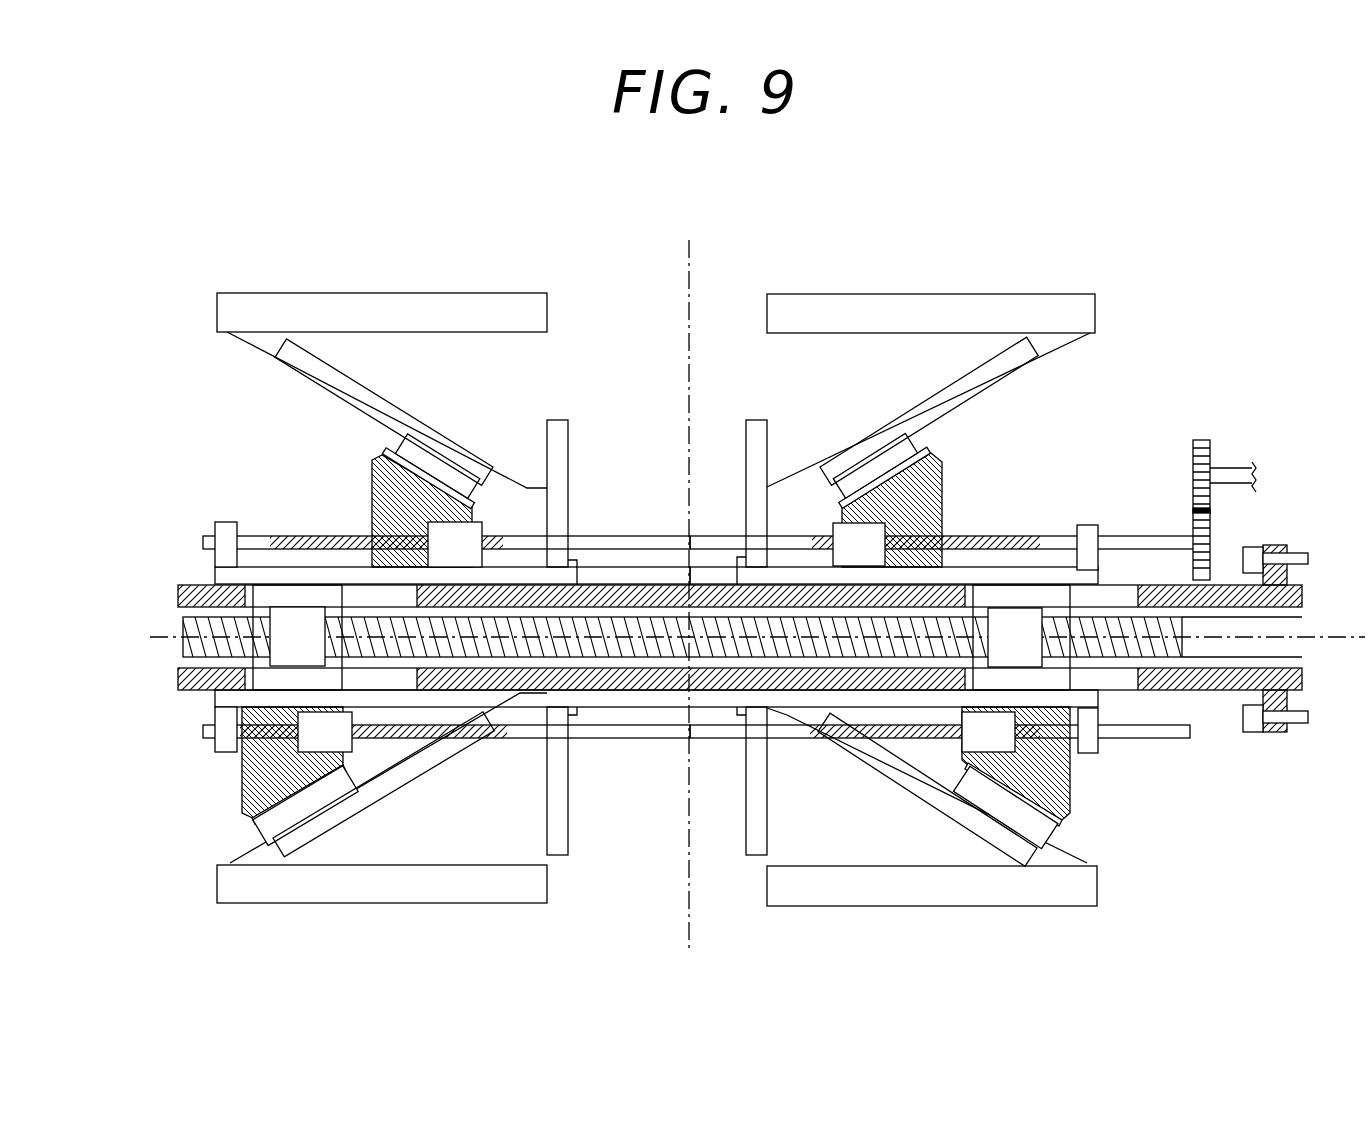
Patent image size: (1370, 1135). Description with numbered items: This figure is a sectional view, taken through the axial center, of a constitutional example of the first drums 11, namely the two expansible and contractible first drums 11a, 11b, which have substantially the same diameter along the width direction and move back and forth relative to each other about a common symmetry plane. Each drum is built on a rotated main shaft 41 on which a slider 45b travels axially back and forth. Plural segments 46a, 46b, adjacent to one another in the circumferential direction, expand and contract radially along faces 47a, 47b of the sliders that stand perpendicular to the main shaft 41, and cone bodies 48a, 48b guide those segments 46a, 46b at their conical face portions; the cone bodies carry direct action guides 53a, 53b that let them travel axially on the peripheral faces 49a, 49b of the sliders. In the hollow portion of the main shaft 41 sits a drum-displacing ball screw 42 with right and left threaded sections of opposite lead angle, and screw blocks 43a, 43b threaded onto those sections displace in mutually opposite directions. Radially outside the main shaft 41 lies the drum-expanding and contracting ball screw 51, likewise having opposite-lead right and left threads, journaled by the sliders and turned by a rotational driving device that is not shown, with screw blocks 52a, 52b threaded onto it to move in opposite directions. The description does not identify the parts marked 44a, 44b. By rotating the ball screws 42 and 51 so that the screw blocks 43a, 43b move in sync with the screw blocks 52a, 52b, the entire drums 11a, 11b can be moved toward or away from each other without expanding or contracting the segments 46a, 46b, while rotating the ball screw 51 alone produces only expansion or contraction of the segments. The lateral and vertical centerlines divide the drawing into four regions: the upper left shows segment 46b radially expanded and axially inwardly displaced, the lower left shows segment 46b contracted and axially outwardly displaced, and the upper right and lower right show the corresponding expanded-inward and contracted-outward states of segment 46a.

The tube processing apparatus 11 is at (726, 565).
The first drum 11a is at (973, 547).
The first drum 11b is at (413, 542).
The main shaft 41 is at (1158, 597).
The ball screw for displacing the drum 42 is at (1208, 648).
The screw block 43a is at (1033, 630).
The screw block 43b is at (287, 623).
The slide block 44a is at (1068, 813).
The slide block 44b is at (243, 775).
The slider 45b is at (232, 577).
The segment 46a is at (880, 315).
The segment 46b is at (343, 311).
The face of the slider 47a is at (770, 457).
The face of the slider 47b is at (547, 450).
The cone body 48a is at (942, 485).
The cone body 48b is at (372, 477).
The peripheral face of the slider 49a is at (1017, 540).
The peripheral face of the slider 49b is at (320, 567).
The ball screw for expanding/contracting the drum 51 is at (945, 578).
The screw block 52a is at (885, 522).
The screw block 52b is at (420, 510).
The direct action guide 53a is at (882, 462).
The direct action guide 53b is at (425, 465).